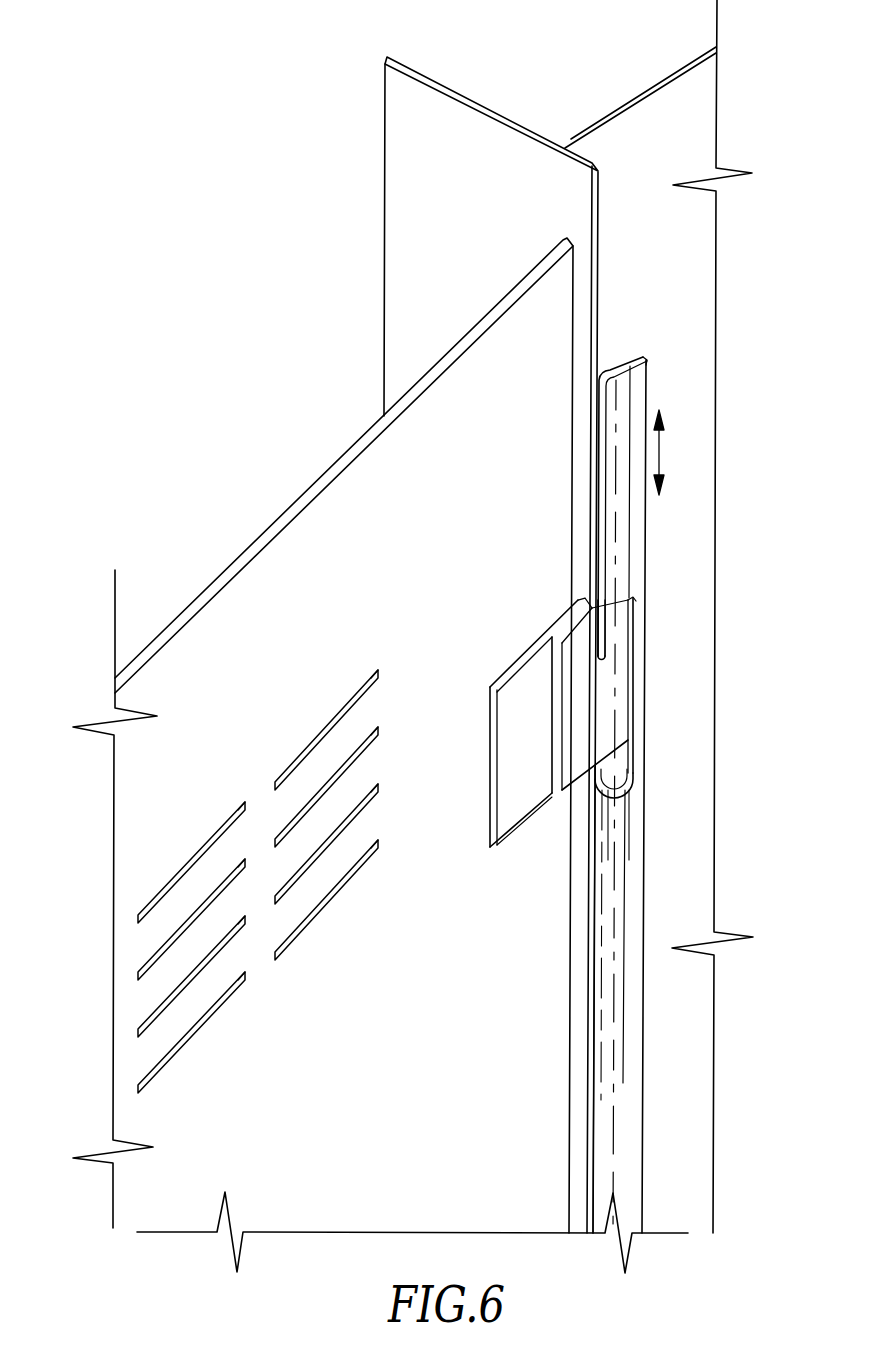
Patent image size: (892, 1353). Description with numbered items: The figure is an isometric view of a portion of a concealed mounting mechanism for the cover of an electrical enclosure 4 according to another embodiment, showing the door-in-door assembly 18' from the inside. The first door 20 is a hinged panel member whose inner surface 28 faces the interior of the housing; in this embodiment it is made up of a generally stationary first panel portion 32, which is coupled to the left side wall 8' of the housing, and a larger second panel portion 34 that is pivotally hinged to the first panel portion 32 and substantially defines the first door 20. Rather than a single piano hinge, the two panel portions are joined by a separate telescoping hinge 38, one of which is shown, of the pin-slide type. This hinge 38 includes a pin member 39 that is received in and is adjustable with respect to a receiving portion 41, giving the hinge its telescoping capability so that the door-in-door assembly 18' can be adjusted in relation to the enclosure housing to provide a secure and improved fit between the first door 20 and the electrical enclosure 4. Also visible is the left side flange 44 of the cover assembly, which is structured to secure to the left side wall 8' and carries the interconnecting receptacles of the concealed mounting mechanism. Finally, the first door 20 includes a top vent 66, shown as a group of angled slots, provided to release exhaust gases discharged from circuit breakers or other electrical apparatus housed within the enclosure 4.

The electrical enclosure 4 is at (757, 1184).
The left side wall 8' is at (640, 93).
The door-in-door assembly 18' is at (286, 219).
The first door 20 is at (205, 595).
The inner surface 28 is at (357, 478).
The first panel portion 32 is at (456, 88).
The second panel portion 34 is at (280, 540).
The telescoping hinge 38 is at (668, 580).
The pin member 39 is at (620, 655).
The receiving portion 41 is at (618, 611).
The left side flange 44 is at (633, 373).
The top vent 66 is at (327, 736).